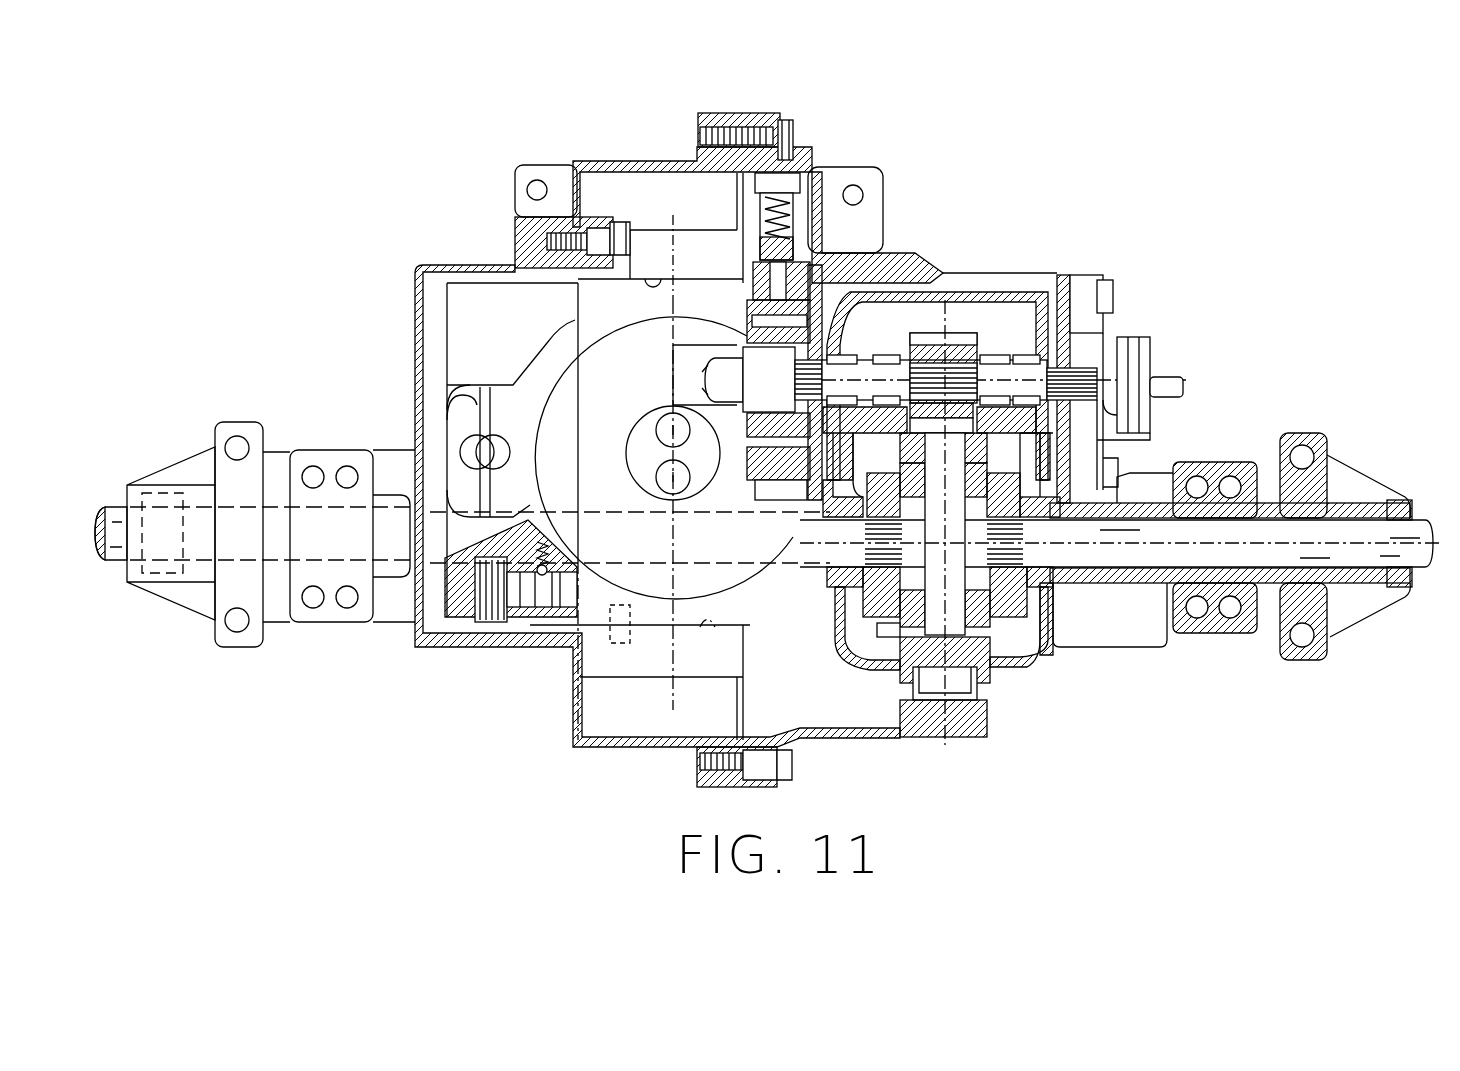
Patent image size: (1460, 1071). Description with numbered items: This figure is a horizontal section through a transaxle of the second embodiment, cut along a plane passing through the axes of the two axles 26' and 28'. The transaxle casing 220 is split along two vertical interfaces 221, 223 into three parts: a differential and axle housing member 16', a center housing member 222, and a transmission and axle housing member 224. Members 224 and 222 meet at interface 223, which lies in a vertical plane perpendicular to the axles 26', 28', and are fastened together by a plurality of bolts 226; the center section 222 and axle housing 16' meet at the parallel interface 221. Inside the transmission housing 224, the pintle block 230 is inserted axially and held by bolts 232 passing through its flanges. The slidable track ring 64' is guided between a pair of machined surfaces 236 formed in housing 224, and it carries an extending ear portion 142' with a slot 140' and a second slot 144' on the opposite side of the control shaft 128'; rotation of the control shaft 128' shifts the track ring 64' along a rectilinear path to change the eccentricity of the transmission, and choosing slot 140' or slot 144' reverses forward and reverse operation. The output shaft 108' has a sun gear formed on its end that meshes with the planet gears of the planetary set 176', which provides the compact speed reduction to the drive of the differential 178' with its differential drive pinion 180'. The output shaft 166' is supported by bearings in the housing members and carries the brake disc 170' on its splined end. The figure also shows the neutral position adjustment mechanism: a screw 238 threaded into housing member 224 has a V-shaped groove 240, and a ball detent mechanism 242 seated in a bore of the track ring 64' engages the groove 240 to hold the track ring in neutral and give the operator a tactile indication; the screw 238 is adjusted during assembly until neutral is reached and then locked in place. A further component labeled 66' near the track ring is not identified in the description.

The differential and axle housing member 16' is at (961, 522).
The axle 26' is at (116, 569).
The axle 28' is at (1120, 584).
The track ring 64' is at (463, 320).
The rotor 66' is at (664, 505).
The output shaft 108' is at (743, 285).
The control shaft 128' is at (421, 419).
The slot 140' is at (430, 452).
The ear portion 142' is at (408, 375).
The second slot 144' is at (419, 355).
The output shaft 166' is at (1110, 391).
The brake disc 170' is at (1094, 361).
The planetary set 176' is at (863, 325).
The differential 178' is at (865, 709).
The differential drive pinion 180' is at (1006, 309).
The transaxle casing 220 is at (606, 156).
The interface 221 is at (946, 258).
The center housing member 222 is at (822, 183).
The interface 223 is at (736, 98).
The transmission and axle housing member 224 is at (487, 265).
The bolts 226 is at (790, 118).
The pintle block 230 is at (687, 610).
The bolts 232 is at (605, 205).
The machined surfaces 236 is at (697, 620).
The screw 238 is at (500, 648).
The V-shaped groove 240 is at (585, 580).
The ball detent mechanism 242 is at (548, 540).